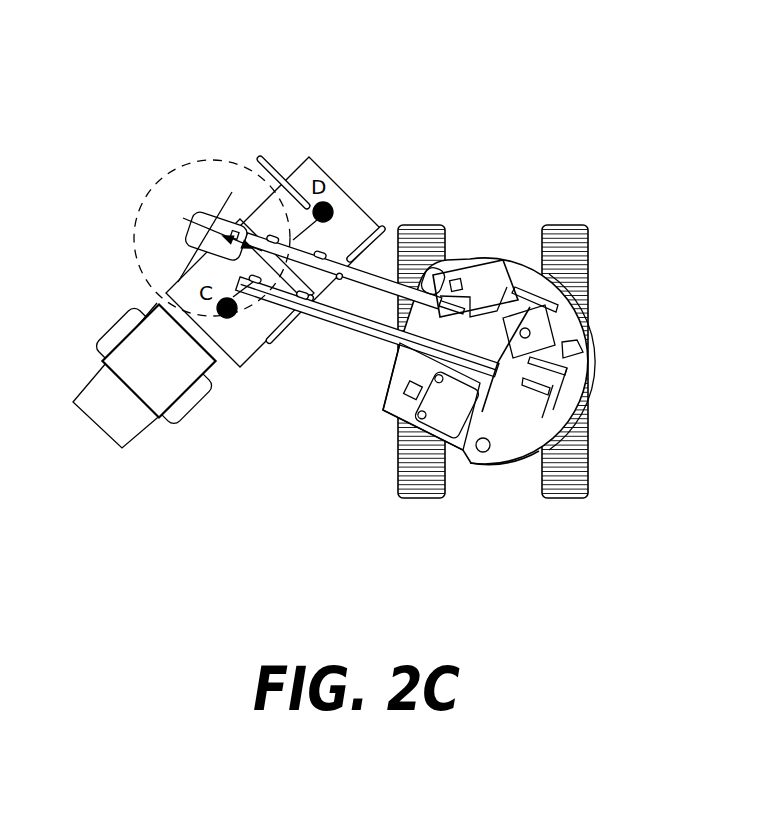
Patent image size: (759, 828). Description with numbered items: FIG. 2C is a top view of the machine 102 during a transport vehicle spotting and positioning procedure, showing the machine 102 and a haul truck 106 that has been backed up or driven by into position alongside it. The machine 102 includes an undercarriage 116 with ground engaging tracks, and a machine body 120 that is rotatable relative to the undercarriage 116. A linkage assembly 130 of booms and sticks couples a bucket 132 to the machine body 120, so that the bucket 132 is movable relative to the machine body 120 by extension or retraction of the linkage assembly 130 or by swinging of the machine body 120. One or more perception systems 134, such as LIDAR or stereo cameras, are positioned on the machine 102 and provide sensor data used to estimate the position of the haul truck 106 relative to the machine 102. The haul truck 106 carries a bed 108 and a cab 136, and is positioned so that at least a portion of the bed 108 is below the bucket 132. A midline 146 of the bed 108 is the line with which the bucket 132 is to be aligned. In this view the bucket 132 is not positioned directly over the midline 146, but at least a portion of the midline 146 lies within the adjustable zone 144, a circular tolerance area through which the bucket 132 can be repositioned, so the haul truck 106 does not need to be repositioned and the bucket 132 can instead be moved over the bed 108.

The machine 102 is at (607, 287).
The haul truck 106 is at (137, 263).
The bed 108 is at (292, 170).
The undercarriage 116 is at (600, 455).
The machine body 120 is at (490, 467).
The linkage assembly 130 is at (350, 293).
The bucket 132 is at (208, 222).
The perception system 134 is at (250, 228).
The cab 136 is at (186, 397).
The adjustable zone 144 is at (170, 173).
The midline 146 is at (312, 220).